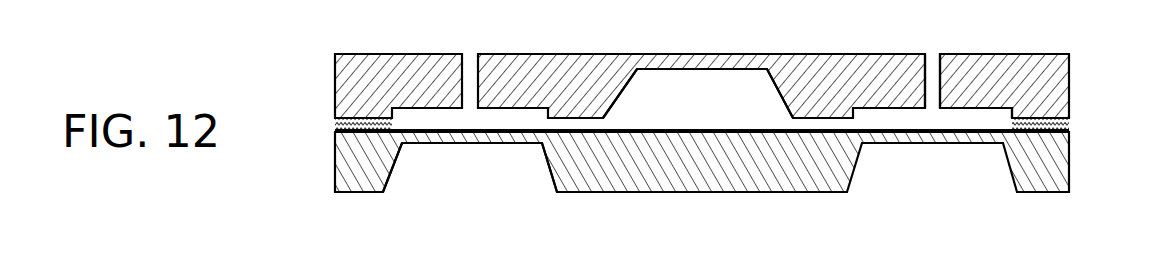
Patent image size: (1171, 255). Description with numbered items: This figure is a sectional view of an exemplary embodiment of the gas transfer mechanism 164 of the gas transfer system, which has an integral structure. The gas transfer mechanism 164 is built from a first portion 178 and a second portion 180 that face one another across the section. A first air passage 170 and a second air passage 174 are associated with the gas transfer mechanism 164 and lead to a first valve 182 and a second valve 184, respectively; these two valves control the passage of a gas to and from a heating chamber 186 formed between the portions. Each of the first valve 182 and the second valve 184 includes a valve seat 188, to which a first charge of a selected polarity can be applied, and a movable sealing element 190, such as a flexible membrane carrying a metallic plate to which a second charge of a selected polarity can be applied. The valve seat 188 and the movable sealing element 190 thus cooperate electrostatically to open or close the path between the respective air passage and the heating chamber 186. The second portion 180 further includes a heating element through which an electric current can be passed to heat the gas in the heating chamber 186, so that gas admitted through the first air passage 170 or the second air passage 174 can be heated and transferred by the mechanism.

The gas transfer mechanism 164 is at (326, 76).
The first air passage 170 is at (473, 58).
The second air passage 174 is at (934, 57).
The first portion 178 is at (1053, 62).
The second portion 180 is at (1040, 170).
The first valve 182 is at (417, 122).
The second valve 184 is at (990, 118).
The heating chamber 186 is at (718, 100).
The valve seat 188 is at (508, 106).
The movable sealing element 190 is at (470, 145).